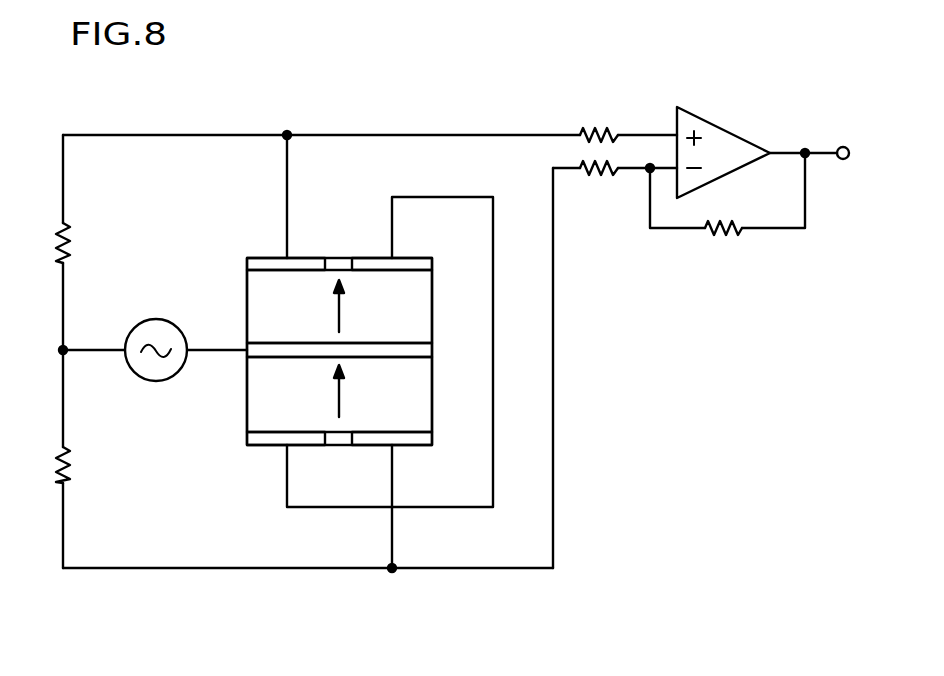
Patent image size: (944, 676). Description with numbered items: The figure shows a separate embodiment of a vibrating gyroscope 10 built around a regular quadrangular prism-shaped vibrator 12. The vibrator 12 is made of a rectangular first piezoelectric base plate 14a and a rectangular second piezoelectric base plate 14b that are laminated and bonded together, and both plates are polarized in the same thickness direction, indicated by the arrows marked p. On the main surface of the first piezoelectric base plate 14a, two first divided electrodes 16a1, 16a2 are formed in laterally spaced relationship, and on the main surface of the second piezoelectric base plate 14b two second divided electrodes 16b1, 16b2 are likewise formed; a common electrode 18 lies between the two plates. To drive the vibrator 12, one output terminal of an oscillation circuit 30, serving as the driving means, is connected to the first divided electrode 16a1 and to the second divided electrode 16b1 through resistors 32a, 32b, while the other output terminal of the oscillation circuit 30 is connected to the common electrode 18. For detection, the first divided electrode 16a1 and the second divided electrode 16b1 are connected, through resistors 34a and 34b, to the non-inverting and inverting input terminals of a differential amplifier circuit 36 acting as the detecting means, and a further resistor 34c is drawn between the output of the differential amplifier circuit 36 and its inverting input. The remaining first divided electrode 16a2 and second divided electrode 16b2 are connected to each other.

The vibrating gyroscope 10 is at (537, 101).
The vibrator 12 is at (334, 351).
The first piezoelectric base plate 14a is at (260, 302).
The second piezoelectric base plate 14b is at (268, 397).
The first divided electrode 16a1 is at (270, 264).
The first divided electrode 16a2 is at (370, 264).
The second divided electrode 16b1 is at (378, 446).
The second divided electrode 16b2 is at (270, 446).
The common electrode 18 is at (425, 348).
The oscillation circuit 30 is at (142, 366).
The resistor 32a is at (72, 245).
The resistor 32b is at (72, 462).
The resistor 34a is at (601, 132).
The resistor 34b is at (600, 176).
The resistor 34c is at (722, 238).
The differential amplifier circuit 36 is at (760, 118).